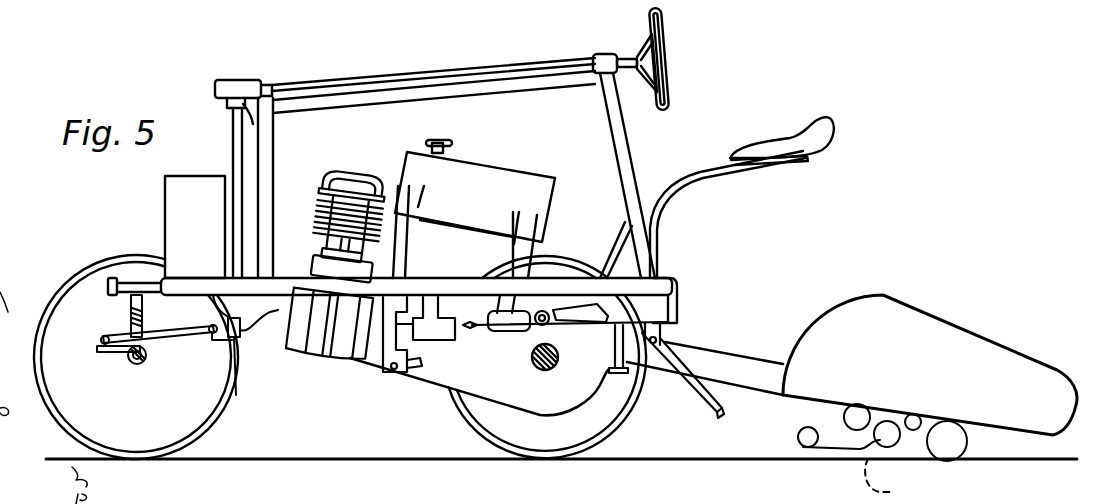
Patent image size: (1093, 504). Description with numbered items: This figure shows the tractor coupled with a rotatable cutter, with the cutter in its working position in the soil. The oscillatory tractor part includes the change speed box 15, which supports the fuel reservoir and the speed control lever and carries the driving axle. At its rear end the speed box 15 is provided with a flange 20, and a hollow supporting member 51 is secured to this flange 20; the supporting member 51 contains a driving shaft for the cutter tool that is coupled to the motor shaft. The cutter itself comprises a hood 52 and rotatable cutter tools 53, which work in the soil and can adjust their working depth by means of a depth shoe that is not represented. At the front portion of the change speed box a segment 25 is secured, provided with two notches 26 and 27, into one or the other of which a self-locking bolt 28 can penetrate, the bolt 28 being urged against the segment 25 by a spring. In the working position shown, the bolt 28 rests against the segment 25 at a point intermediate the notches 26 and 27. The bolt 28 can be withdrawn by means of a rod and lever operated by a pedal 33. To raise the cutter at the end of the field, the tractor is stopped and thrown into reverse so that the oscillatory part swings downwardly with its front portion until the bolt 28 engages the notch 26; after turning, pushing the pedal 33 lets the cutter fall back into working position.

The change speed box 15 is at (512, 393).
The flange 20 is at (612, 370).
The segment 25 is at (392, 350).
The notch 26 is at (400, 308).
The notch 27 is at (410, 374).
The self-locking bolt 28 is at (414, 347).
The pedal 33 is at (710, 410).
The hollow supporting member 51 is at (768, 378).
The hood 52 is at (822, 333).
The rotatable cutter tools 53 is at (810, 437).